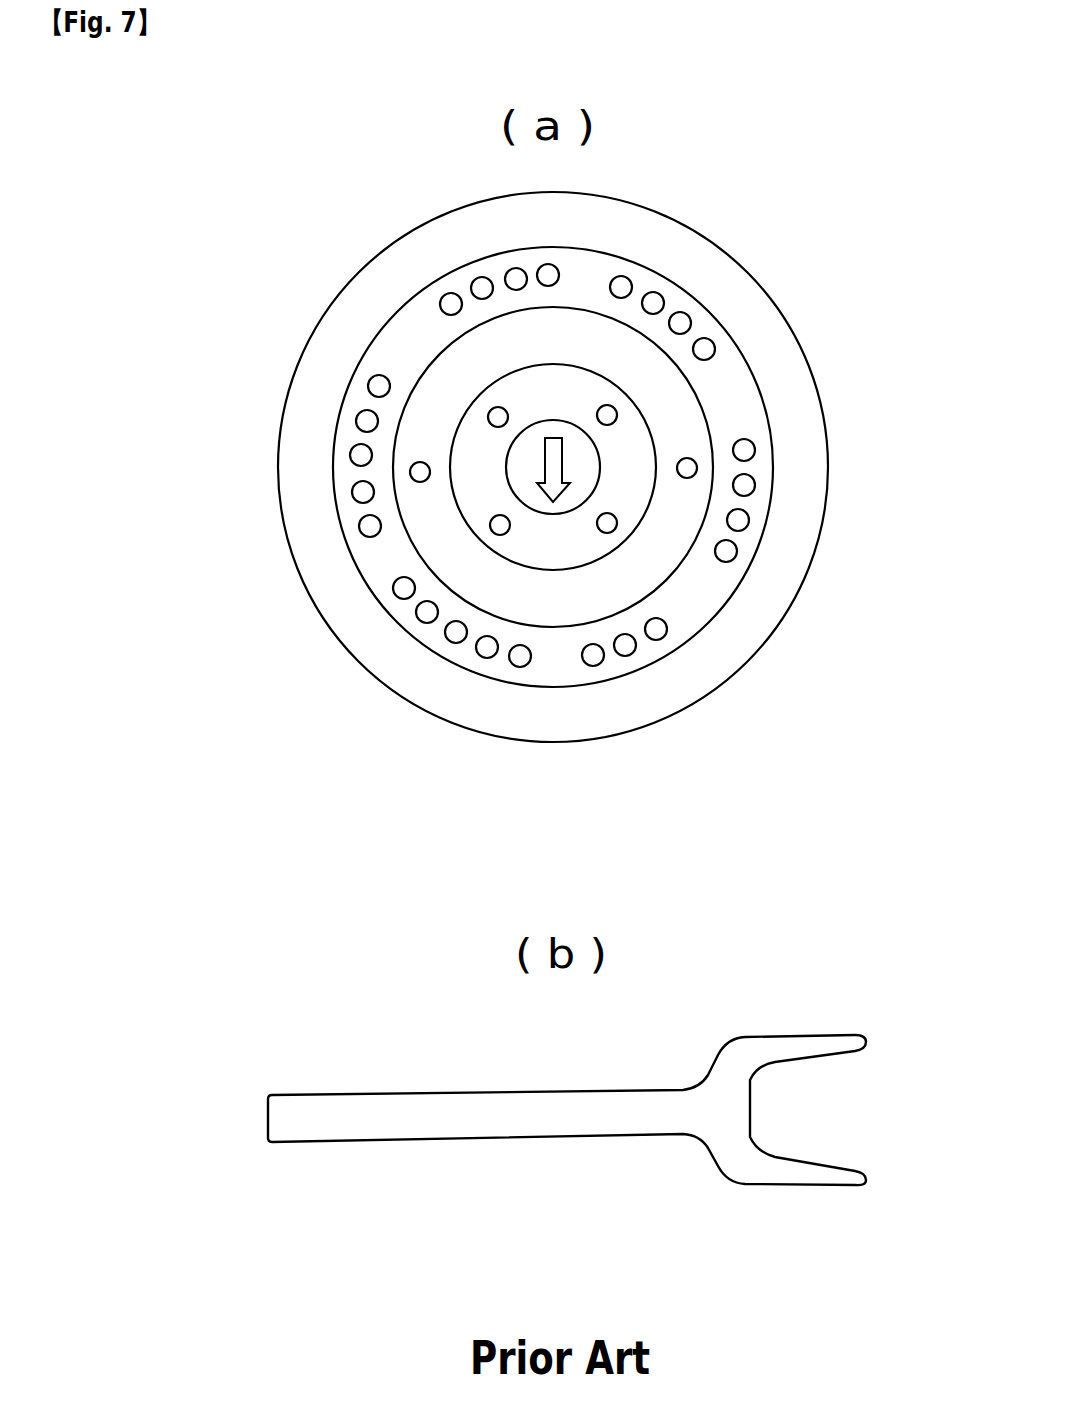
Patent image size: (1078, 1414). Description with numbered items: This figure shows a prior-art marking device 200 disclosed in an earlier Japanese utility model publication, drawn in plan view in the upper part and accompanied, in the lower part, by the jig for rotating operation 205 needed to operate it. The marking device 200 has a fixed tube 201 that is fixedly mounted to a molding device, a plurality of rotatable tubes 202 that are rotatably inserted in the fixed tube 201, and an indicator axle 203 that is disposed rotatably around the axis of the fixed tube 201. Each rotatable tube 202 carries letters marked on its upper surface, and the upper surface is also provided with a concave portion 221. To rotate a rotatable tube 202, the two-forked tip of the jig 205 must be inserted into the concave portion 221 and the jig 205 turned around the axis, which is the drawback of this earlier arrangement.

The marking device 200 is at (555, 462).
The fixed tube 201 is at (808, 415).
The rotatable tubes 202 is at (638, 507).
The indicator axle 203 is at (521, 462).
The concave portion 221 is at (707, 347).
The jig for rotating operation 205 is at (525, 1100).